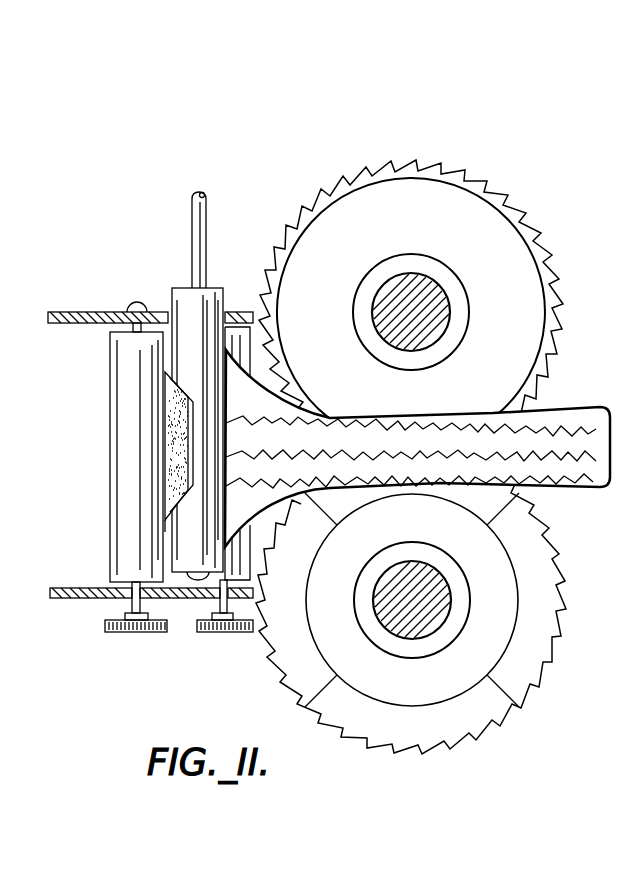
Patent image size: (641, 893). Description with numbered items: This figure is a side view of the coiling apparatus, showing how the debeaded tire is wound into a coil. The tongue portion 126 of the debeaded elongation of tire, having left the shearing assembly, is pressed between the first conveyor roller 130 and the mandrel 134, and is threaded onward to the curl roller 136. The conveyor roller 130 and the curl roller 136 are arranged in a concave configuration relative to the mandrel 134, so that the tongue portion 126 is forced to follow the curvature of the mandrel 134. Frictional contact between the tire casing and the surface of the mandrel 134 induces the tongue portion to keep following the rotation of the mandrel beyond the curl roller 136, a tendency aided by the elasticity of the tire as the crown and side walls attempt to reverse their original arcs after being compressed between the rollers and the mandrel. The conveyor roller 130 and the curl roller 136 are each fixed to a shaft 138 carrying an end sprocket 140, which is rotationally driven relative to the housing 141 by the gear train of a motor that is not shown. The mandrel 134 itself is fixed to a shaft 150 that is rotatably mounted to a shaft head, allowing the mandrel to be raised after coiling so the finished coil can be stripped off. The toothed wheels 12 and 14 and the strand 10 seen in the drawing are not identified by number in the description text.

The rope strand 10 is at (563, 482).
The upper toothed wheel 12 is at (415, 192).
The lower toothed wheel 14 is at (528, 663).
The tongue portion 126 is at (165, 462).
The first conveyor roller 130 is at (247, 355).
The mandrel 134 is at (190, 290).
The curl roller 136 is at (125, 386).
The shaft 138 is at (128, 605).
The end sprocket 140 is at (152, 633).
The housing 141 is at (100, 312).
The shaft 150 is at (195, 205).